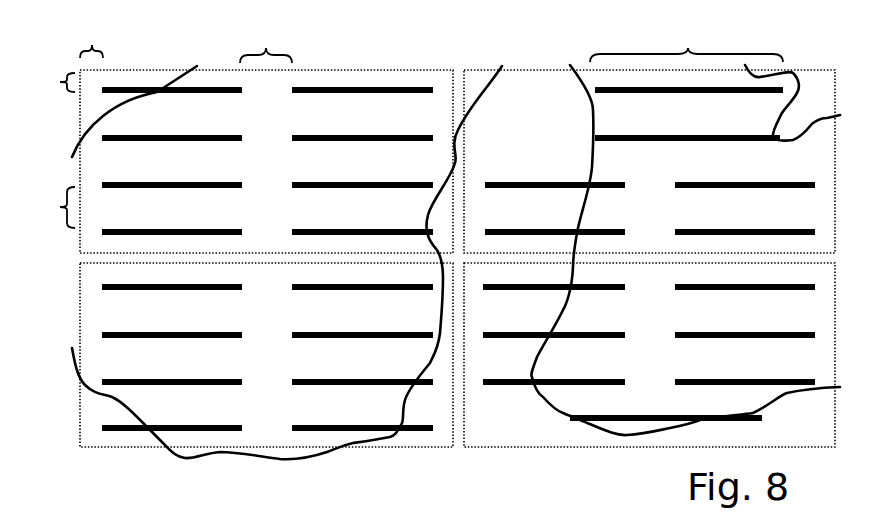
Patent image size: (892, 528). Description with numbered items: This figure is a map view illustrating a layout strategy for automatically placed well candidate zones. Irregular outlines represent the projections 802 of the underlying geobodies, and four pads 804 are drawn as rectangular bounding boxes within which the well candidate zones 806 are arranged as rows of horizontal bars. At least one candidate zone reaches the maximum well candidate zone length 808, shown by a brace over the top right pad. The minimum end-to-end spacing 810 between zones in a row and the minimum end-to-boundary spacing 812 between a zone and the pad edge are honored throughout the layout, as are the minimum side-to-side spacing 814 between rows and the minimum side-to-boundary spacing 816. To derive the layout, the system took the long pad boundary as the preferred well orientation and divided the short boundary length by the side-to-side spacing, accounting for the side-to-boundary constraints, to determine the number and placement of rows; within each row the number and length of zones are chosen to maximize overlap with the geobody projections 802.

The projections of the underlying geobodies 802 is at (588, 88).
The pads 804 is at (475, 70).
The well candidate zones 806 is at (487, 230).
The maximum well candidate zone length 808 is at (686, 42).
The minimum end-to-end spacing 810 is at (266, 42).
The minimum end-to-boundary spacing 812 is at (94, 39).
The minimum side-to-side spacing 814 is at (47, 207).
The minimum side-to-boundary spacing 816 is at (47, 82).